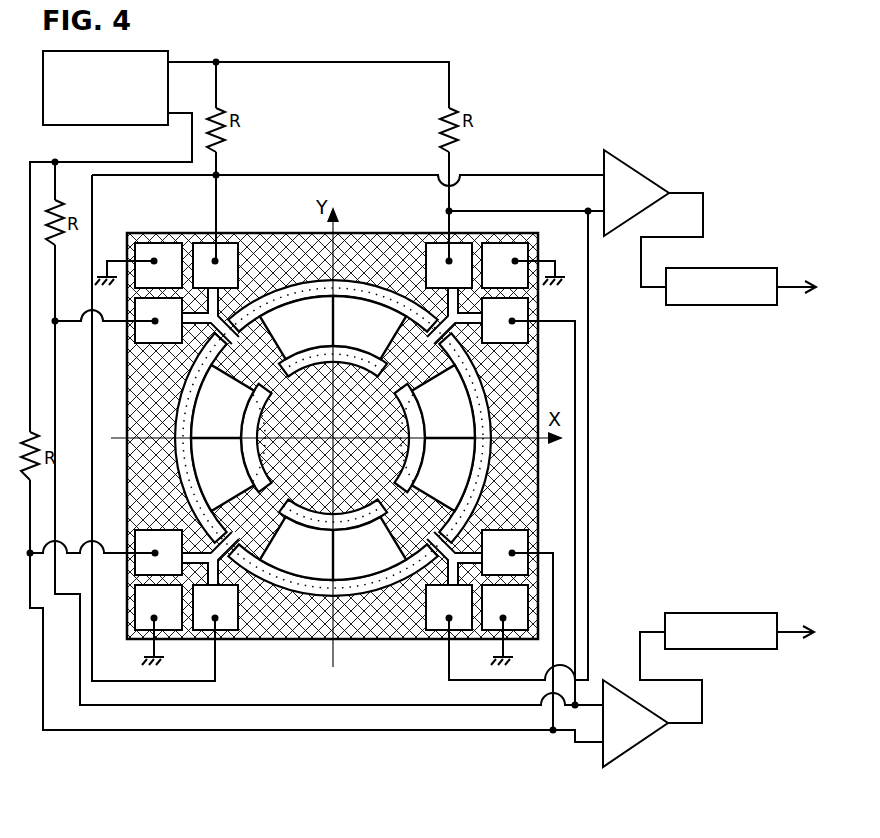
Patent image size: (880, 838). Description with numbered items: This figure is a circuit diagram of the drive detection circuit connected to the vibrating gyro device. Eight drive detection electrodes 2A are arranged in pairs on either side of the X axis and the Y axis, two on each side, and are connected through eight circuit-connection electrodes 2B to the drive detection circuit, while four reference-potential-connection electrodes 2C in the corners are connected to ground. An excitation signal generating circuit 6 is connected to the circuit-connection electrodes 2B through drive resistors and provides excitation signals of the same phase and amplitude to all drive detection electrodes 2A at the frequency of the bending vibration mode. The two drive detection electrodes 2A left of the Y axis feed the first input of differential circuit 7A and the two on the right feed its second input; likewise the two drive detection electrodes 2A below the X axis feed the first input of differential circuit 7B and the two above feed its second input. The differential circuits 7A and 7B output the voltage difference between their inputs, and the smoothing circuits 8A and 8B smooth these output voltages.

The excitation signal generating circuit 6 is at (143, 51).
The differential circuit 7A is at (604, 150).
The differential circuit 7B is at (603, 680).
The smoothing circuit 8A is at (753, 268).
The smoothing circuit 8B is at (745, 613).
The drive detection electrode 2A is at (232, 416).
The circuit-connection electrode 2B is at (223, 284).
The reference-potential-connection electrode 2C is at (164, 282).